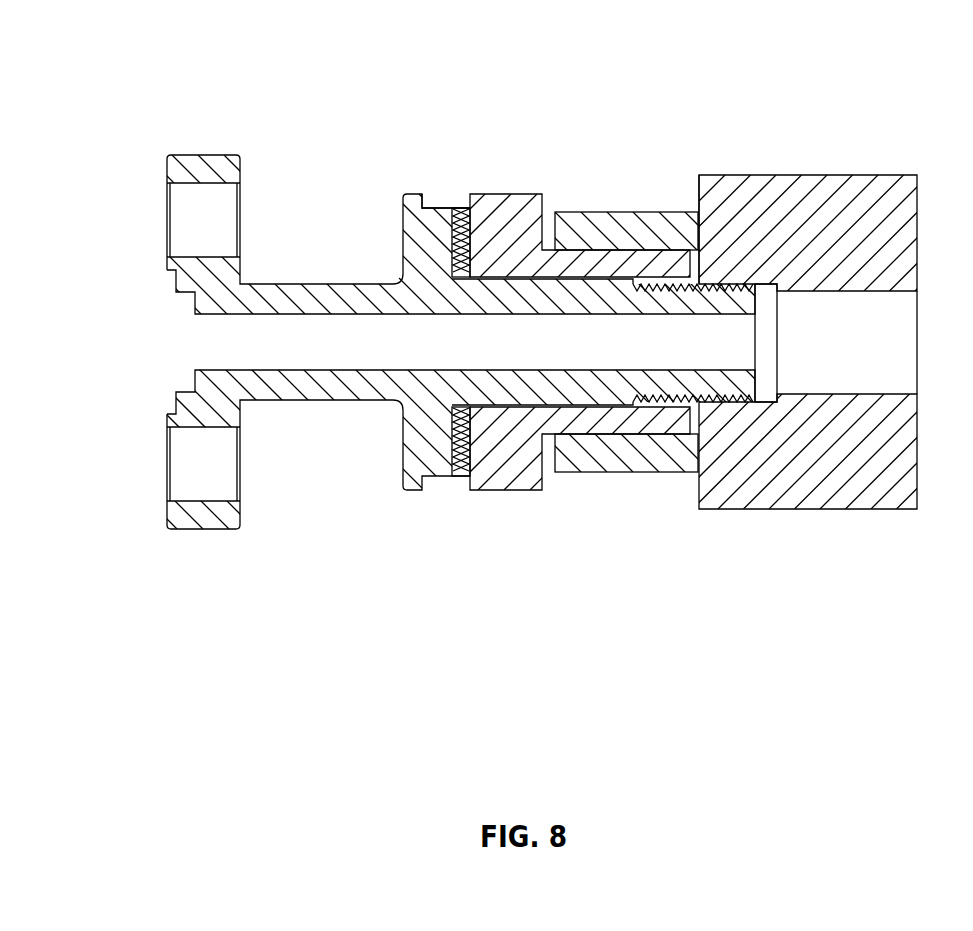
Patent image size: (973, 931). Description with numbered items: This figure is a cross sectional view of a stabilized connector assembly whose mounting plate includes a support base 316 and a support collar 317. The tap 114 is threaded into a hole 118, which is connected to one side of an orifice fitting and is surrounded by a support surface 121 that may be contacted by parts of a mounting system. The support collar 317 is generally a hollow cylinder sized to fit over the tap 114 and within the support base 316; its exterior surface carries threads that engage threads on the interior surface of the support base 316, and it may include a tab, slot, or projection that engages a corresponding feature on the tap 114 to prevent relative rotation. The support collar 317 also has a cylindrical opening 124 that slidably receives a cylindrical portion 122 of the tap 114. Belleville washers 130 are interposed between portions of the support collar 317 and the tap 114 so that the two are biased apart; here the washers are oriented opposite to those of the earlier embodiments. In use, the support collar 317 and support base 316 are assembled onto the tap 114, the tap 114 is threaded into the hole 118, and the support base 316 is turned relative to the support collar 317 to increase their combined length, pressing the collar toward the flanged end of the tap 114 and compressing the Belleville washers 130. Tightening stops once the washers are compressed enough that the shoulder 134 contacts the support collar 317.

The tap 114 is at (272, 400).
The hole 118 is at (727, 284).
The support surface 121 is at (698, 192).
The cylindrical portion 122 is at (432, 203).
The cylindrical opening 124 is at (467, 203).
The Belleville washers 130 is at (470, 475).
The shoulder 134 is at (410, 488).
The support base 316 is at (660, 474).
The support collar 317 is at (543, 492).